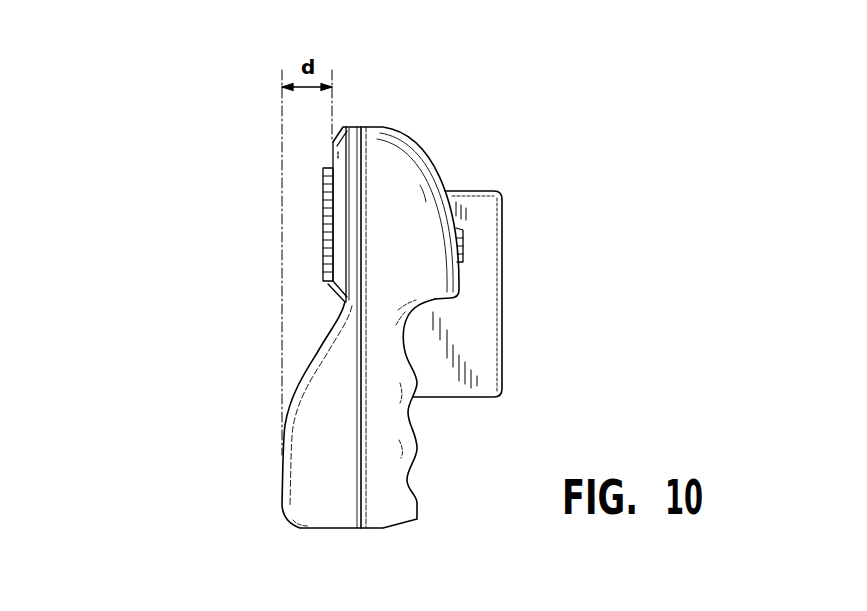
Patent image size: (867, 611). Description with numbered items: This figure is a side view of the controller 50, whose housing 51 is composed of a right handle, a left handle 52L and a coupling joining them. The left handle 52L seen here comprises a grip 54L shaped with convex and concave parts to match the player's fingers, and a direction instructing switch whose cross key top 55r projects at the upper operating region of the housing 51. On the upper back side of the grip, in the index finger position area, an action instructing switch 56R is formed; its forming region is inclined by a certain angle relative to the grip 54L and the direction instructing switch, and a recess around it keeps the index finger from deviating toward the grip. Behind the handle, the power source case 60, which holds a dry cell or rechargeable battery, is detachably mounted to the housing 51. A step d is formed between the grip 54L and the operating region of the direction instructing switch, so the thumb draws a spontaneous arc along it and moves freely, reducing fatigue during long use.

The controller 50 is at (158, 195).
The housing 51 is at (377, 150).
The left handle 52L is at (317, 428).
The grip 54L is at (257, 416).
The cross key top 55r is at (323, 185).
The action instructing switch 56R is at (463, 242).
The power source case 60 is at (483, 322).